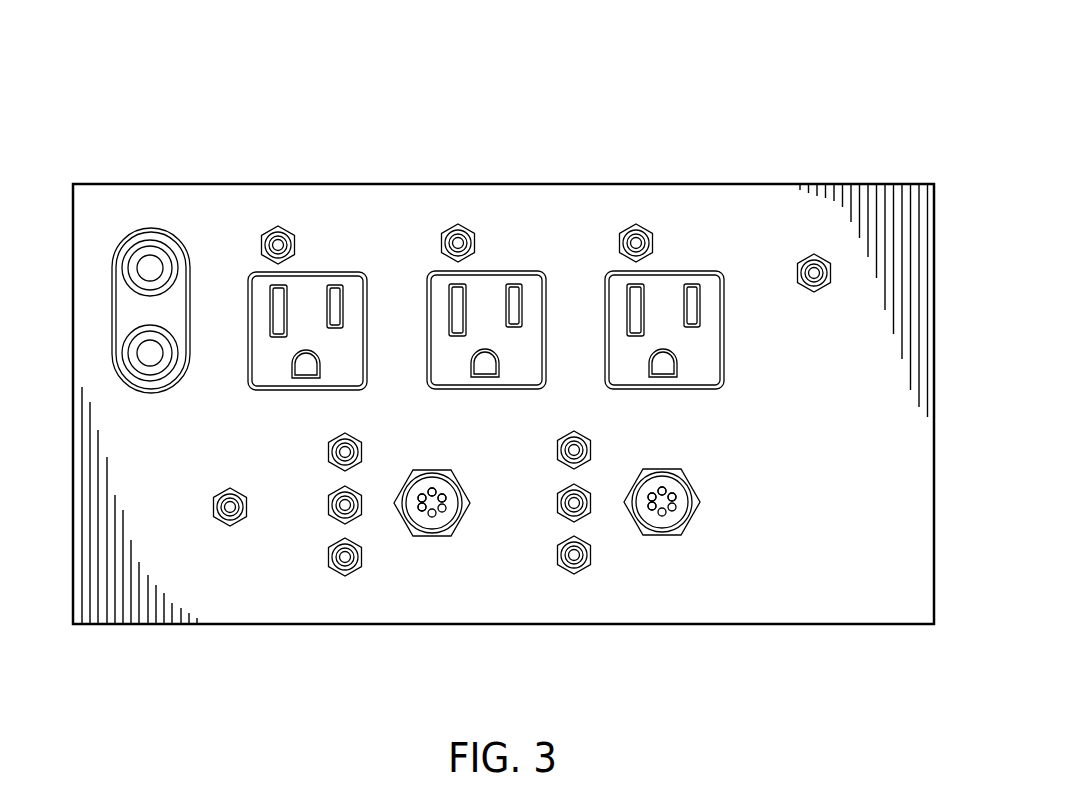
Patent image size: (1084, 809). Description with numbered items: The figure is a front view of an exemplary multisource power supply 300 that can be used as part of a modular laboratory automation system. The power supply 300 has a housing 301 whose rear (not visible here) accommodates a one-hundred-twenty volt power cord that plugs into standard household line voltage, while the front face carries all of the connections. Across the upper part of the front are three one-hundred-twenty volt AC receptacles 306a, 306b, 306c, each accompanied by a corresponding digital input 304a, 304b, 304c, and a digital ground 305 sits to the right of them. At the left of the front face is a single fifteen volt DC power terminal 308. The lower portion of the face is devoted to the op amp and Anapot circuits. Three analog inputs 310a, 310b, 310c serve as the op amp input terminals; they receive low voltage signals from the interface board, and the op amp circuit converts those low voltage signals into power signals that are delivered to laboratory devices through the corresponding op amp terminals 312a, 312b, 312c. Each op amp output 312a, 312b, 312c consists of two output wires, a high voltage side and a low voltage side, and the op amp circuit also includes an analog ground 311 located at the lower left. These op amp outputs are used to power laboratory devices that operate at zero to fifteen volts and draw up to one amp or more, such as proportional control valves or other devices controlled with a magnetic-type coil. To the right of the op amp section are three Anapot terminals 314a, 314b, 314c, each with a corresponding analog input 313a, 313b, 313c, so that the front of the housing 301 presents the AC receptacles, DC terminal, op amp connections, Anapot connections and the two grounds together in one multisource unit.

The multisource power supply 300 is at (723, 78).
The housing 301 is at (878, 184).
The digital input 304a is at (267, 227).
The digital input 304b is at (446, 225).
The digital input 304c is at (623, 225).
The digital ground 305 is at (803, 257).
The 120V AC receptacle 306a is at (338, 272).
The 120V AC receptacle 306b is at (512, 271).
The 120V AC receptacle 306c is at (680, 271).
The 15V DC power terminal 308 is at (141, 228).
The analog input 310a is at (327, 452).
The analog input 310b is at (327, 505).
The analog input 310c is at (327, 557).
The analog ground 311 is at (222, 524).
The op amp terminal 312a is at (443, 509).
The op amp terminal 312b is at (432, 493).
The op amp terminal 312c is at (432, 492).
The analog input 313a is at (557, 451).
The analog input 313b is at (557, 503).
The analog input 313c is at (557, 555).
The Anapot terminal 314a is at (673, 509).
The Anapot terminal 314b is at (662, 491).
The Anapot terminal 314c is at (662, 491).